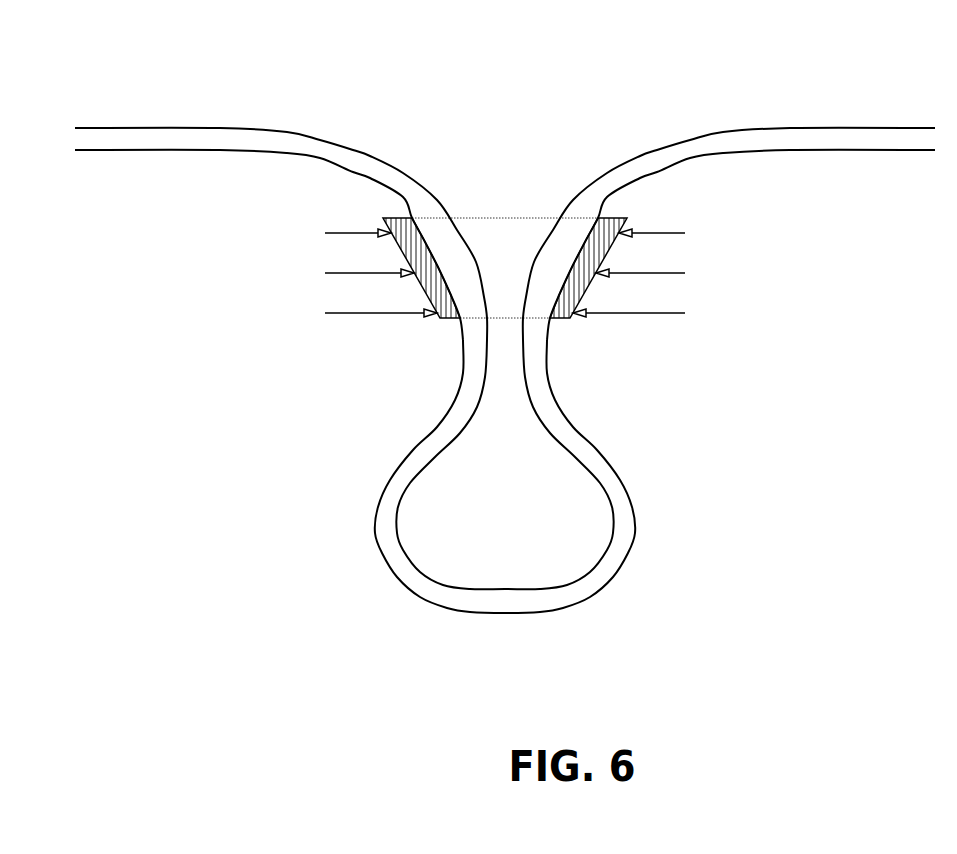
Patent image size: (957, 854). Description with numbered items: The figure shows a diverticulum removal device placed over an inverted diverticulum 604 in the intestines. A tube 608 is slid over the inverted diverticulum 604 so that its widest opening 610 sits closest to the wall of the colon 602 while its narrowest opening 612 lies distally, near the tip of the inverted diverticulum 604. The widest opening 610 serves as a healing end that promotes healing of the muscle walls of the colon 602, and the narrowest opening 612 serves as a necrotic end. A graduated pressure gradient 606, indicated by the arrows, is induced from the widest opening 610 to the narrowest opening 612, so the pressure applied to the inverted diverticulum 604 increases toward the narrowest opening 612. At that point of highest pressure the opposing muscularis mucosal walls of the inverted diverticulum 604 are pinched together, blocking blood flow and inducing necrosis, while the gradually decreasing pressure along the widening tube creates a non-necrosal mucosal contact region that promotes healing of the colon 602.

The colon 602 is at (300, 110).
The inverted diverticulum 604 is at (460, 616).
The graduated pressure gradient 606 is at (318, 283).
The tube 608 is at (638, 212).
The widest opening 610 is at (512, 205).
The narrowest opening 612 is at (494, 344).